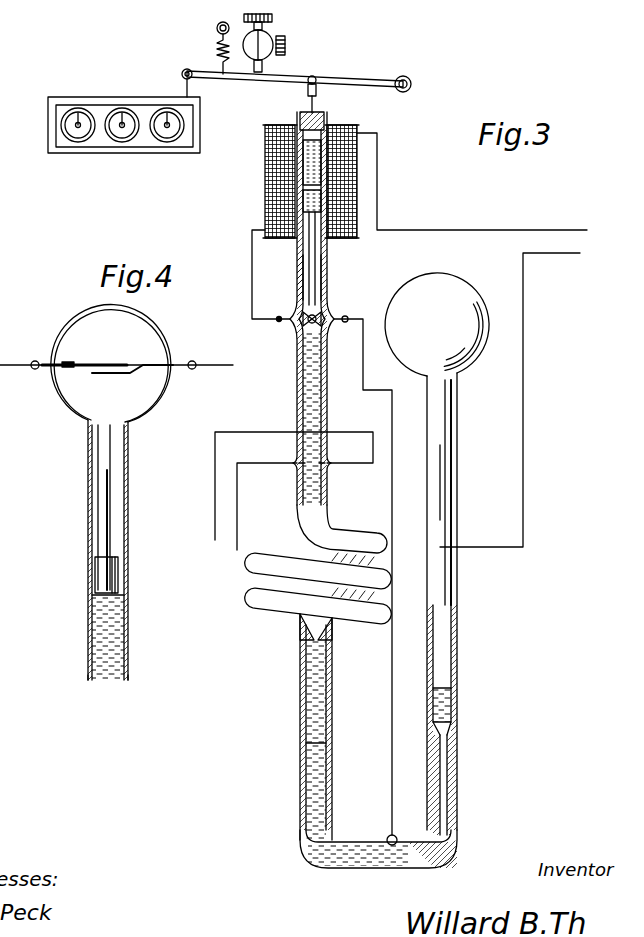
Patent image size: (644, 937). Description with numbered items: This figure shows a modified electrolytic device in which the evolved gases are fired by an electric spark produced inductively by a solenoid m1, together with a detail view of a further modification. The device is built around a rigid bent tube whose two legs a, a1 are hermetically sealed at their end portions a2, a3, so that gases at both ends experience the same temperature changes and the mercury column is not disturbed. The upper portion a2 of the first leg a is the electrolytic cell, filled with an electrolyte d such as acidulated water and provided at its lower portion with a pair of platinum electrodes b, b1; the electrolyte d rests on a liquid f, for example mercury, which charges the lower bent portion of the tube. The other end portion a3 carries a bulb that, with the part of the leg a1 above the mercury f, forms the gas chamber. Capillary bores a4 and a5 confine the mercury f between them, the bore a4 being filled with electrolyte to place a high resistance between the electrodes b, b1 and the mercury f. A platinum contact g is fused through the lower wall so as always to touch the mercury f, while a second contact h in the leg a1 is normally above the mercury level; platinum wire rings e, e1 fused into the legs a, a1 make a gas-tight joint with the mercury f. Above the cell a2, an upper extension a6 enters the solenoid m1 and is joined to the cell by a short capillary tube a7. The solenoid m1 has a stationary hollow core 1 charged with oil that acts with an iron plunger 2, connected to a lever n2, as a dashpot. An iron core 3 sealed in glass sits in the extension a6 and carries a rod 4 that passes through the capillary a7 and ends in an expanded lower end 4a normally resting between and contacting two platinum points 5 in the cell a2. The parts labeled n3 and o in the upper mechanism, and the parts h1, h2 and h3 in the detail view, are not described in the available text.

In FIG. 3, the lever n2 is at (355, 78).
In FIG. 3, the resistance n3 is at (218, 50).
In FIG. 3, the indicating instruments o is at (135, 140).
In FIG. 3, the iron plunger 2 is at (267, 143).
In FIG. 3, the solenoid m1 is at (265, 200).
In FIG. 3, the stationary hollow core 1 is at (325, 165).
In FIG. 3, the iron core 3 is at (340, 222).
In FIG. 3, the upper extension a6 is at (300, 240).
In FIG. 3, the rod 4 is at (312, 275).
In FIG. 3, the electrolytic cell a2 is at (298, 372).
In FIG. 3, the tube leg a1 is at (325, 262).
In FIG. 4, the tube leg a1 is at (90, 654).
In FIG. 3, the capillary tube a7 is at (327, 292).
In FIG. 3, the platinum wires 5 is at (312, 328).
In FIG. 3, the expanded lower end 4a is at (322, 328).
In FIG. 3, the electrolyte d is at (312, 402).
In FIG. 3, the electrode b is at (297, 462).
In FIG. 3, the electrode b1 is at (327, 462).
In FIG. 3, the capillary bore a4 is at (258, 598).
In FIG. 3, the tube leg a is at (300, 676).
In FIG. 3, the platinum ring e is at (306, 743).
In FIG. 3, the mercury f is at (322, 782).
In FIG. 4, the mercury f is at (110, 633).
In FIG. 3, the platinum contact g is at (383, 862).
In FIG. 3, the upper closed end portion a3 is at (457, 294).
In FIG. 4, the upper closed end portion a3 is at (145, 397).
In FIG. 3, the platinum contact h is at (463, 548).
In FIG. 3, the platinum ring e1 is at (453, 704).
In FIG. 3, the capillary bore a5 is at (443, 802).
In FIG. 4, the electrode h1 is at (100, 362).
In FIG. 4, the electrode h2 is at (108, 376).
In FIG. 4, the contact piece h3 is at (97, 577).